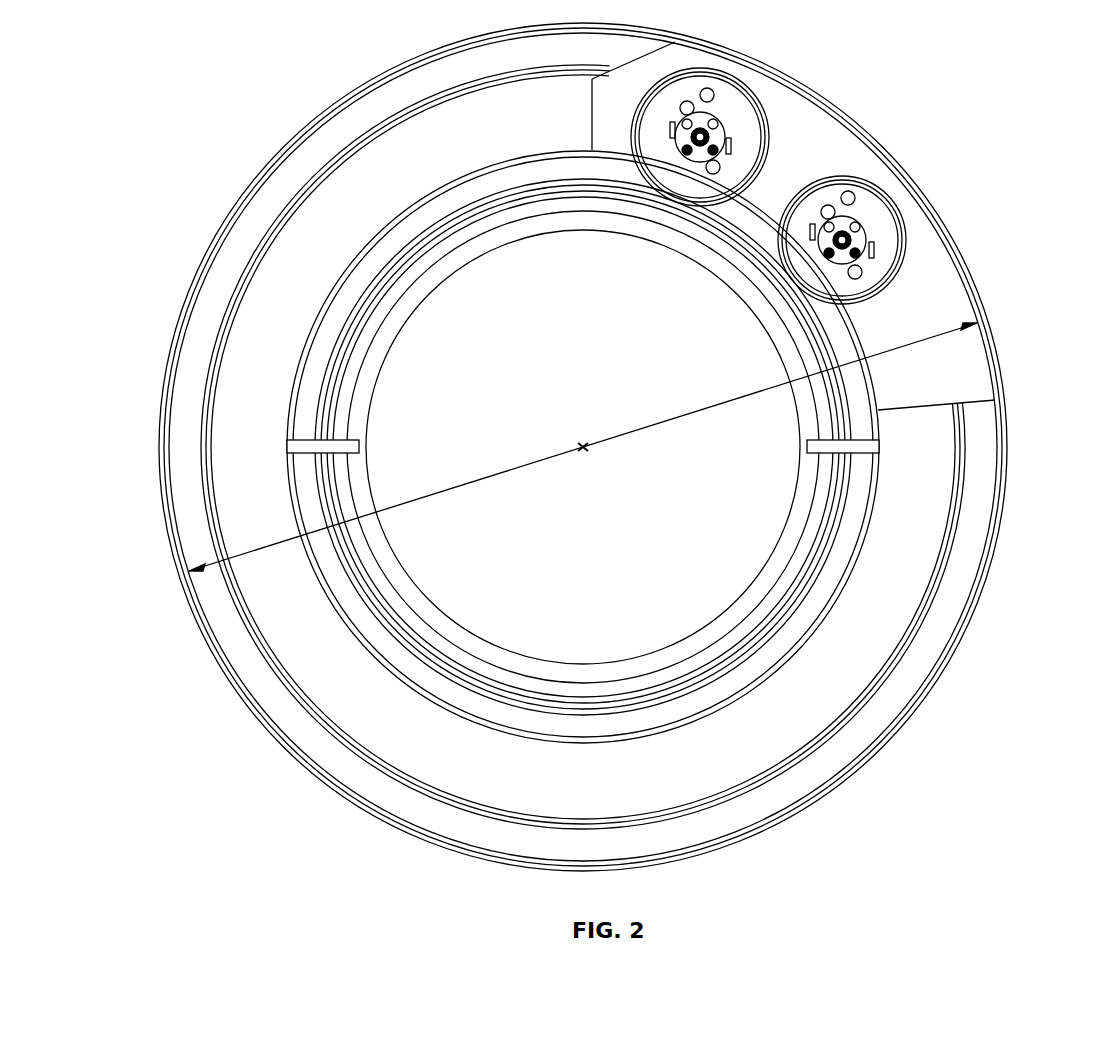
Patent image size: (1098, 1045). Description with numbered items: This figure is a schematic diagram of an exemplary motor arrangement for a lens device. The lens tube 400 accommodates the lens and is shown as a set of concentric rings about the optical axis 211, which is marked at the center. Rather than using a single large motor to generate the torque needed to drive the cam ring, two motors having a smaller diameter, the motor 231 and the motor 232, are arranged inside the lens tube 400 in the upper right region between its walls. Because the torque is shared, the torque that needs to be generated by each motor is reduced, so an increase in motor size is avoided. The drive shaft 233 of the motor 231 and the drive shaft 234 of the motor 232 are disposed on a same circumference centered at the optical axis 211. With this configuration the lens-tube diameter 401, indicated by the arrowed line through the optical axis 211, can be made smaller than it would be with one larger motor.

The lens tube 400 is at (1007, 508).
The lens-tube diameter 401 is at (920, 348).
The optical axis 211 is at (580, 444).
The motor 231 is at (890, 257).
The motor 232 is at (747, 147).
The drive shaft 233 is at (850, 227).
The drive shaft 234 is at (707, 117).